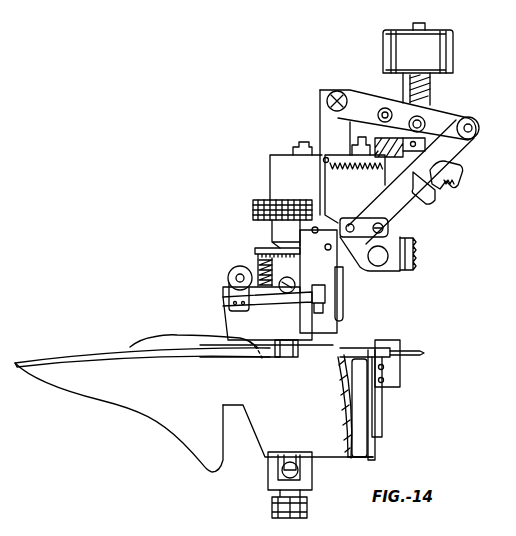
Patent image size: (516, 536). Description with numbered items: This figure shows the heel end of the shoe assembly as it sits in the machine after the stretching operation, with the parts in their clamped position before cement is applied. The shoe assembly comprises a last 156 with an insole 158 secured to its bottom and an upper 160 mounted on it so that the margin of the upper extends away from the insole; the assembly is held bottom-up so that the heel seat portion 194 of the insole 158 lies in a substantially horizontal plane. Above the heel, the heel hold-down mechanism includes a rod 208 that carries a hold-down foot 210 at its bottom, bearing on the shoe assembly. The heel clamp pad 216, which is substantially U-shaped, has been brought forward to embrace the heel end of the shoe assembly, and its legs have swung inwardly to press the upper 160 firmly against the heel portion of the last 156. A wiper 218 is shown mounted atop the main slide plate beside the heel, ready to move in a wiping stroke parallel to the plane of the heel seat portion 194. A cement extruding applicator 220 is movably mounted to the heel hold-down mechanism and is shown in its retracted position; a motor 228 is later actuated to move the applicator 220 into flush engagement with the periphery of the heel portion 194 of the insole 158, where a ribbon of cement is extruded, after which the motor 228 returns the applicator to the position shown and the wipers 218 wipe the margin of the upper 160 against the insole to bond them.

The last 156 is at (163, 413).
The insole 158 is at (68, 354).
The upper 160 is at (180, 346).
The heel seat portion 194 is at (268, 358).
The rod 208 is at (272, 233).
The hold-down foot 210 is at (288, 355).
The heel clamp pad 216 is at (373, 457).
The wipers 218 is at (412, 355).
The cement extruding applicator 220 is at (220, 287).
The motor 228 is at (442, 48).